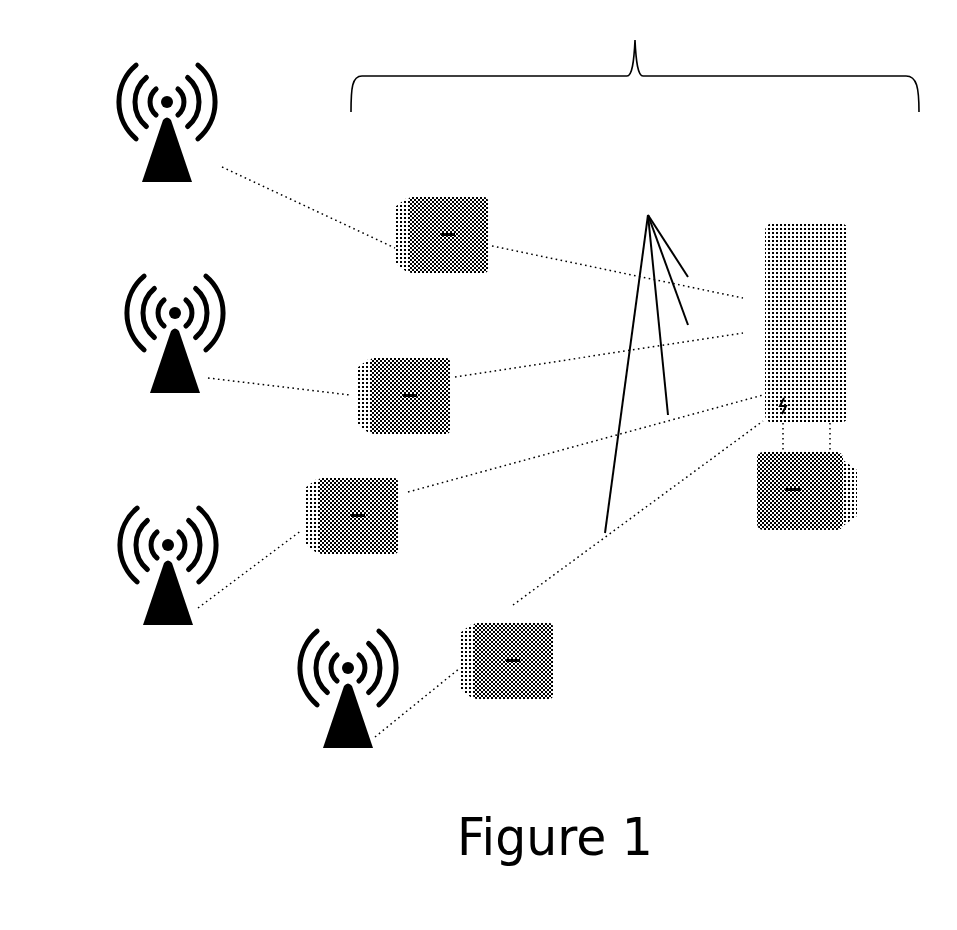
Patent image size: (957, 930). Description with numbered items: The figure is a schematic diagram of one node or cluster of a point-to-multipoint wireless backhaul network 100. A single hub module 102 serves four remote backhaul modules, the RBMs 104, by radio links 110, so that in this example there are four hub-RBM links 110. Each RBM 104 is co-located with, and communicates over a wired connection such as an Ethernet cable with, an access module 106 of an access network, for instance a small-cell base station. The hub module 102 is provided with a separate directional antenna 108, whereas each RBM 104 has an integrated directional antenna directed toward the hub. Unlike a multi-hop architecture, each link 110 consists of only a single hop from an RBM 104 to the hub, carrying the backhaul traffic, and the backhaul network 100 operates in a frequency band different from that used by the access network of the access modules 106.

The point-to-multipoint wireless backhaul network 100 is at (635, 58).
The hub module 102 is at (847, 503).
The remote backhaul module (RBM) 104 is at (471, 415).
The access module (AM) 106 is at (228, 426).
The directional antenna 108 is at (850, 323).
The radio links (hub-RBM links) 110 is at (646, 352).